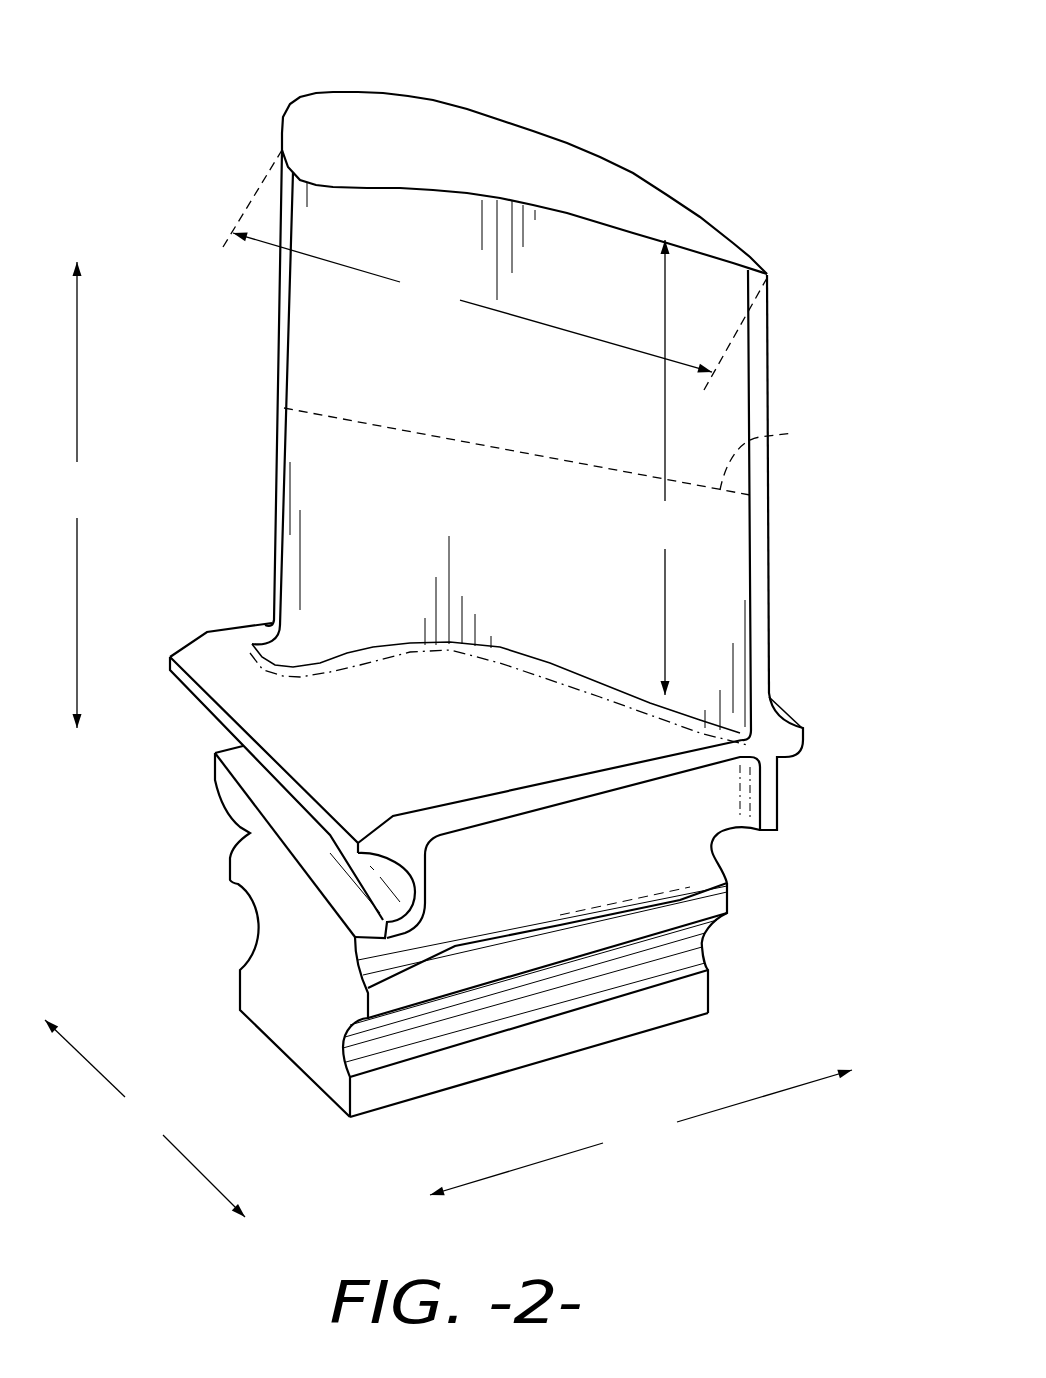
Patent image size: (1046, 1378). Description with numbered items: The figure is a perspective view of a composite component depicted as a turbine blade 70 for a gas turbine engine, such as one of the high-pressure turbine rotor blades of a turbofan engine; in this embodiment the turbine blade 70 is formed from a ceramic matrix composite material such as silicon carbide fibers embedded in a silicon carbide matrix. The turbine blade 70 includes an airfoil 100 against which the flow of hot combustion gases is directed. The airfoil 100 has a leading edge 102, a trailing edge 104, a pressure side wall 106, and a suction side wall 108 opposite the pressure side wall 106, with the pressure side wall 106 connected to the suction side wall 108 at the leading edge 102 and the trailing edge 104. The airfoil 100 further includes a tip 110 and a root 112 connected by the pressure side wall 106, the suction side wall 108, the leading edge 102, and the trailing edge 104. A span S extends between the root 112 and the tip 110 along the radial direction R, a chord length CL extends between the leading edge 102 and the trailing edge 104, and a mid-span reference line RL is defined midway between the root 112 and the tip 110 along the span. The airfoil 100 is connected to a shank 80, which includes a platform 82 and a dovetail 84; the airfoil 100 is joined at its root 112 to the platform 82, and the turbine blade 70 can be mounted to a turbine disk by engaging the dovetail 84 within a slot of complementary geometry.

The turbine blade 70 is at (165, 94).
The shank 80 is at (674, 831).
The platform 82 is at (550, 748).
The dovetail 84 is at (690, 945).
The airfoil 100 is at (471, 407).
The leading edge 102 is at (275, 467).
The trailing edge 104 is at (760, 572).
The pressure side wall 106 is at (627, 230).
The suction side wall 108 is at (457, 100).
The tip 110 is at (258, 126).
The root 112 is at (367, 663).